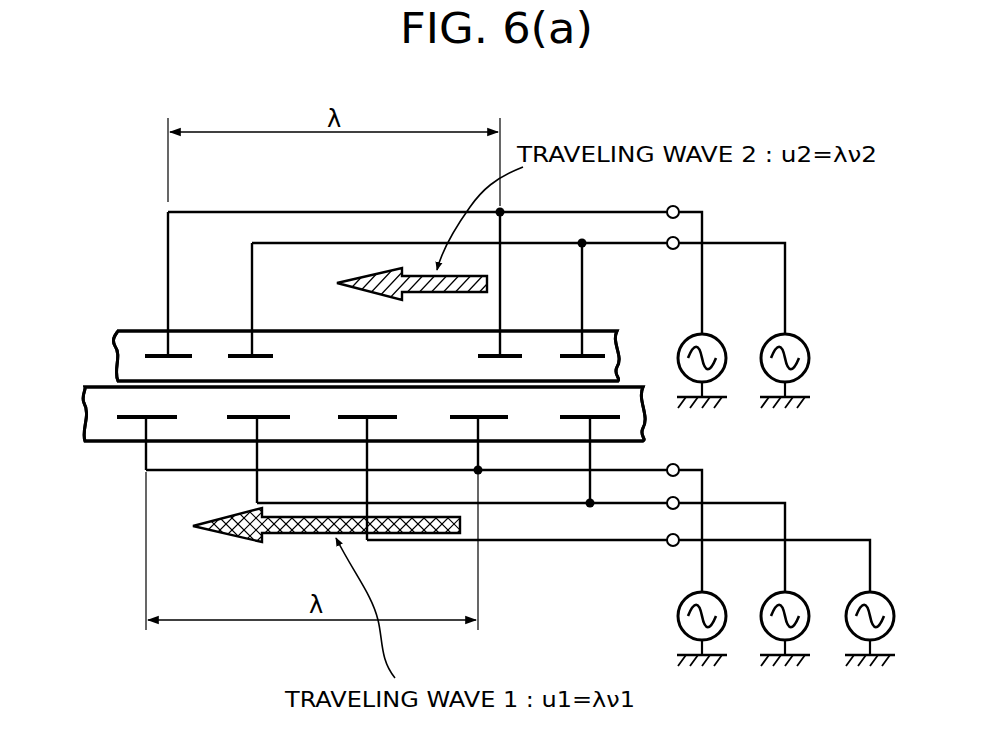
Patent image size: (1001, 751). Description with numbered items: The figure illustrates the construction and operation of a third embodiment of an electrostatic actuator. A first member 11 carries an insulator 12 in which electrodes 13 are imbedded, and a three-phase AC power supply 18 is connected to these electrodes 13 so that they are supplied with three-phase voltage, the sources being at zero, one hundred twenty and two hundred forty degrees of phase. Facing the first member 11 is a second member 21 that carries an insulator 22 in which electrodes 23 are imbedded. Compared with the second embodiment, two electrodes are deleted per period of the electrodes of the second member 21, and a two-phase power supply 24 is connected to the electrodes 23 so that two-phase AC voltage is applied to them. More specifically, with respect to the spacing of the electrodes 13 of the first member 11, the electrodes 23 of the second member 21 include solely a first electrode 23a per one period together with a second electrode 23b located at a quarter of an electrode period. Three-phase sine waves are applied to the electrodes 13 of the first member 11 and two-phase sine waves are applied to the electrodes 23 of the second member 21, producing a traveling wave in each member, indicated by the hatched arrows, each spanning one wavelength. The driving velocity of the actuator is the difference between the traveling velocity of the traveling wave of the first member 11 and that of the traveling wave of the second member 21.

The first member 11 is at (81, 422).
The insulator 12 is at (103, 428).
The electrodes 13 is at (133, 422).
The three-phase AC power supply 18 is at (810, 528).
The second member 21 is at (110, 356).
The insulator 22 is at (120, 338).
The electrodes 23 is at (145, 350).
The first electrode 23a is at (185, 353).
The second electrode 23b is at (264, 353).
The two-phase power supply 24 is at (792, 288).